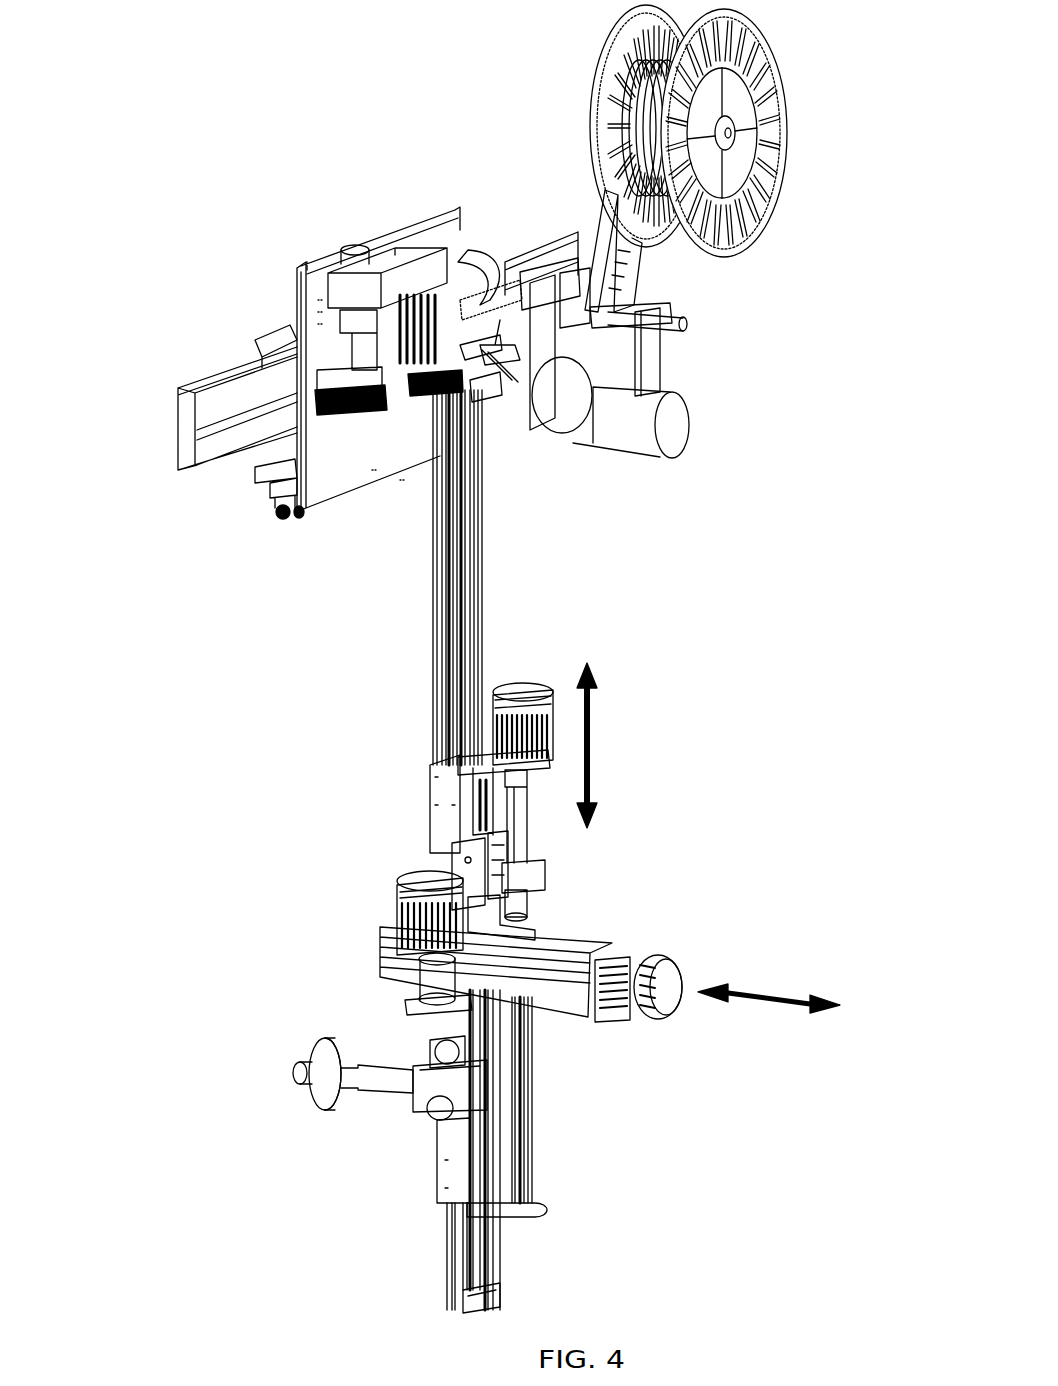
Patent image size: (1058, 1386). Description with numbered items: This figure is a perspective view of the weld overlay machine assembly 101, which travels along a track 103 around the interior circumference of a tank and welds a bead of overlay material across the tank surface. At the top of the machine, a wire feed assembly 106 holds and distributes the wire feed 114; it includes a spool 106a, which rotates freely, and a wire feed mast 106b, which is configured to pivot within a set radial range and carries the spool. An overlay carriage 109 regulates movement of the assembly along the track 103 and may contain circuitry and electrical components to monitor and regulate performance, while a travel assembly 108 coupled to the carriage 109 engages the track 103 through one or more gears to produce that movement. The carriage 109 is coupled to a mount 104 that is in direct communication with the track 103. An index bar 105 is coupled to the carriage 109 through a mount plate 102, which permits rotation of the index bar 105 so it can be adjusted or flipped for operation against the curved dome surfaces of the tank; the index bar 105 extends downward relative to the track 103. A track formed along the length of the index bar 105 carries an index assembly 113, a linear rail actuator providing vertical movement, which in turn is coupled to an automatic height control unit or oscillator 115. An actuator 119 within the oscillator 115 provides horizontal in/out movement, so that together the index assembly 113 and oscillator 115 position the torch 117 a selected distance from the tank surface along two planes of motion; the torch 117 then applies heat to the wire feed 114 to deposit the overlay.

The weld overlay machine assembly 101 is at (225, 282).
The mount plate 102 is at (472, 262).
The track 103 is at (192, 378).
The mount 104 is at (255, 470).
The index bar 105 is at (485, 578).
The wire feed assembly 106 is at (573, 207).
The spool 106a is at (757, 228).
The wire feed mast 106b is at (633, 280).
The travel assembly 108 is at (380, 427).
The overlay carriage 109 is at (338, 482).
The index assembly 113 is at (570, 853).
The wire feed 114 is at (622, 108).
The automatic height control unit/oscillator 115 is at (398, 830).
The torch 117 is at (365, 1133).
The actuator 119 is at (585, 937).